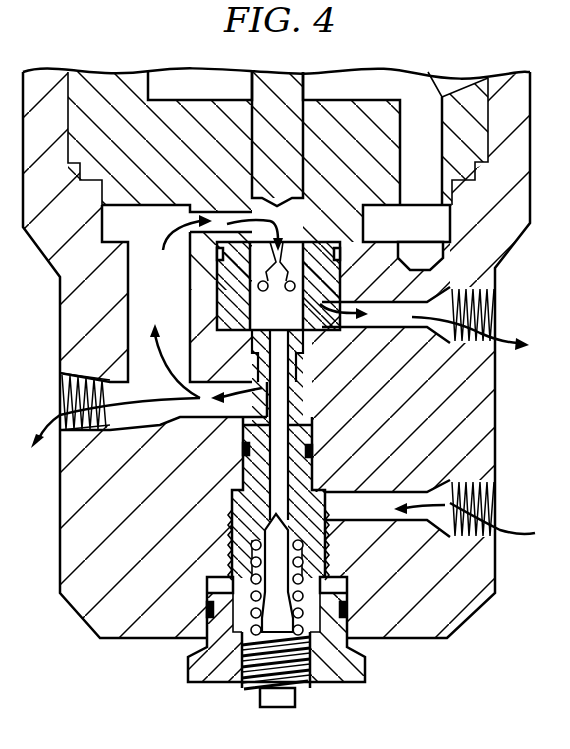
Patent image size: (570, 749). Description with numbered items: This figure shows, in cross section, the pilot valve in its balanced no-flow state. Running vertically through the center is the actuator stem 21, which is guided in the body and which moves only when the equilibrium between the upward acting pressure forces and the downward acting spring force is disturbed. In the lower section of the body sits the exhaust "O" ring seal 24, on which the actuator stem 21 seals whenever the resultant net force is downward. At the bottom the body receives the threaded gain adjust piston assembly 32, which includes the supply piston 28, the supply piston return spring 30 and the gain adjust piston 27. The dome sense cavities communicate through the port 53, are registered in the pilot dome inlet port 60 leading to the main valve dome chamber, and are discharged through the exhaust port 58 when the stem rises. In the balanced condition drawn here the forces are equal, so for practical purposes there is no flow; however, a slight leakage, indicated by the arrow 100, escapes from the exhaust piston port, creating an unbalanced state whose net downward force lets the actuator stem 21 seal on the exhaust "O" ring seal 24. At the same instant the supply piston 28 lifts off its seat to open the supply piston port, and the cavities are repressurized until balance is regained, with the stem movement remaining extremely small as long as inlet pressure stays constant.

The actuator stem 21 is at (288, 151).
The exhaust "O" ring seal 24 is at (260, 287).
The gain adjust piston 27 is at (367, 669).
The supply piston 28 is at (272, 482).
The supply piston return spring 30 is at (256, 618).
The gain adjust piston assembly 32 is at (335, 696).
The port 53 is at (498, 513).
The exhaust port 58 is at (492, 320).
The pilot dome inlet port 60 is at (63, 404).
The arrow 100 is at (345, 308).